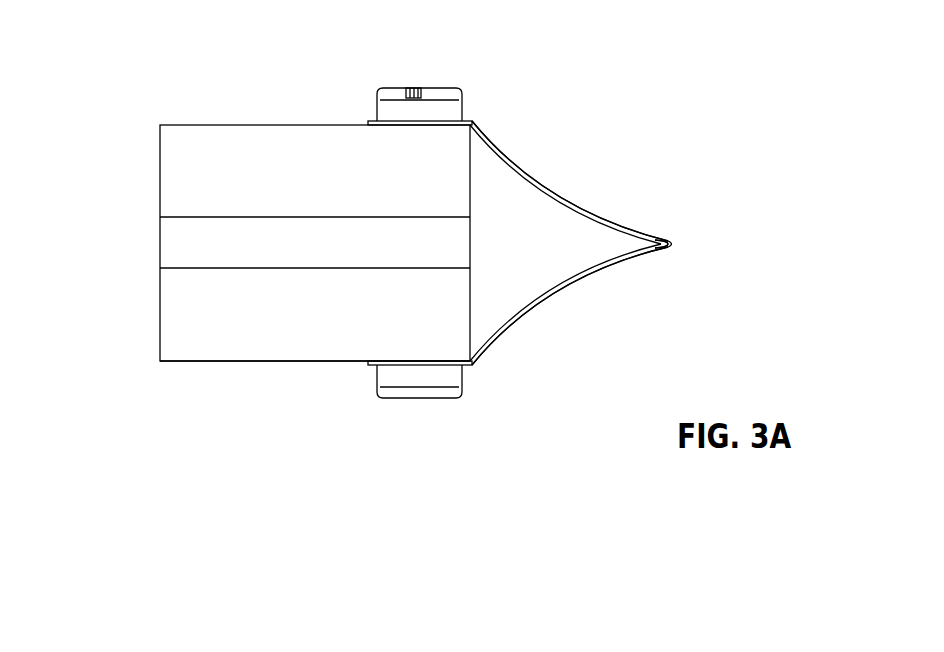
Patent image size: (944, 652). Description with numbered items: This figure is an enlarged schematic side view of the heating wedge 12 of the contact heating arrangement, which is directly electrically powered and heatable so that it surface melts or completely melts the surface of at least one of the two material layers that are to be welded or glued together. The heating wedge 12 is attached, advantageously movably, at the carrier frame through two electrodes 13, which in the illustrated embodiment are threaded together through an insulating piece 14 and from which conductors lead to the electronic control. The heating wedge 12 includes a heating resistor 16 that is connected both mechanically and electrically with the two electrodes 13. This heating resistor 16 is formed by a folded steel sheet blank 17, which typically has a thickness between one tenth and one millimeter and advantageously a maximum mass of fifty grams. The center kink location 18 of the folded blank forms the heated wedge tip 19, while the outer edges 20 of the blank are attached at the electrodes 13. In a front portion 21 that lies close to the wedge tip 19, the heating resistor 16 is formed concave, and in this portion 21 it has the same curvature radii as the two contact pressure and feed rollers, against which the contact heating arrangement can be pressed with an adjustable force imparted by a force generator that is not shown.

The heating wedge 12 is at (196, 401).
The electrode 13 is at (217, 313).
The insulating piece 14 is at (192, 245).
The heating resistor 16 is at (562, 198).
The steel sheet blank 17 is at (542, 305).
The center kink location 18 is at (709, 254).
The heating wedge tip 19 is at (709, 254).
The outer edge 20 is at (367, 367).
The front portion 21 is at (545, 150).